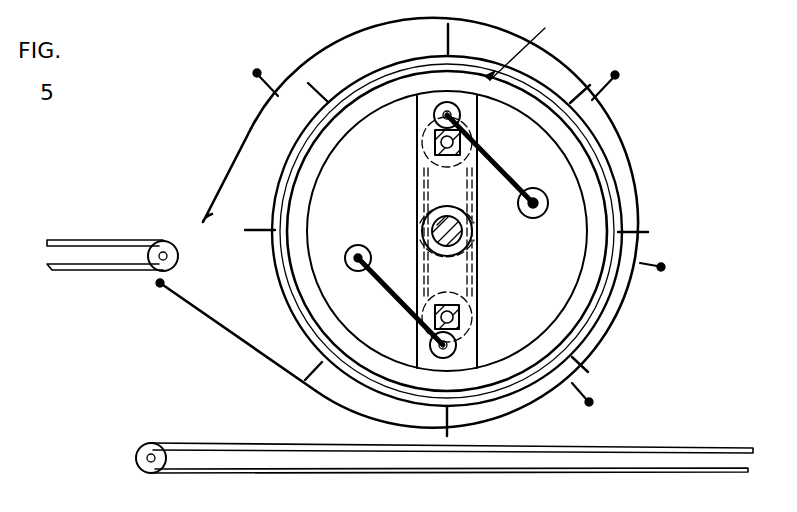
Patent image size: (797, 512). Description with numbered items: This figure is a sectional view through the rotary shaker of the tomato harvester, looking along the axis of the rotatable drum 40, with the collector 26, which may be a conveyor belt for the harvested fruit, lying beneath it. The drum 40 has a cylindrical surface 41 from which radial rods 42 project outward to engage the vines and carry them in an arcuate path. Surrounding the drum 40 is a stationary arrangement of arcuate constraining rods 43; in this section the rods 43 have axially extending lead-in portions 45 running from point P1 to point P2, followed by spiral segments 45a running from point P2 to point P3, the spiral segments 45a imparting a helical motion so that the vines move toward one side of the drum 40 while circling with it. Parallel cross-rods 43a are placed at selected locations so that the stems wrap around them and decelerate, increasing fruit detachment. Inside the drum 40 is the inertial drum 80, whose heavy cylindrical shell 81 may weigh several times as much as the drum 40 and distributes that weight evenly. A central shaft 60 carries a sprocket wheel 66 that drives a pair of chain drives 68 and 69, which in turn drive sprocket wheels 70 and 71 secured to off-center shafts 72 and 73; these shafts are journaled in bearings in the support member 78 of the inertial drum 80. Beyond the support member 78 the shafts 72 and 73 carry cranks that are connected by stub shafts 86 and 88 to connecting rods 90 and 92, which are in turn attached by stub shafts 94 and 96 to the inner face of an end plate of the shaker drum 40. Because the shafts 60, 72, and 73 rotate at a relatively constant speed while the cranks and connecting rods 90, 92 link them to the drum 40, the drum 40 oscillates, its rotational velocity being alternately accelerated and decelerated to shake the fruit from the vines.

The collector 26 is at (205, 443).
The rotatable drum 40 is at (613, 213).
The cylindrical surface 41 is at (593, 150).
The radial rods 42 is at (450, 36).
The arcuate constraining rods 43 is at (344, 55).
The cross-rods 43a is at (253, 76).
The lead-in portions 45 is at (362, 385).
The spiral segments 45a is at (565, 66).
The shaft 60 is at (432, 233).
The sprocket wheel 66 is at (474, 236).
The chain drive 68 is at (420, 180).
The chain drive 69 is at (474, 296).
The sprocket wheel 70 is at (436, 143).
The sprocket wheel 71 is at (466, 320).
The off-center shaft 72 is at (423, 132).
The off-center shaft 73 is at (463, 338).
The support member 78 is at (474, 272).
The inertial drum 80 is at (528, 45).
The cylindrical shell 81 is at (592, 216).
The stub shaft 86 is at (462, 117).
The stub shaft 88 is at (430, 345).
The connecting rod 90 is at (488, 164).
The connecting rod 92 is at (383, 285).
The stub shaft 94 is at (533, 198).
The stub shaft 96 is at (356, 252).
The point P1 is at (162, 288).
The point P2 is at (660, 272).
The point P3 is at (200, 220).